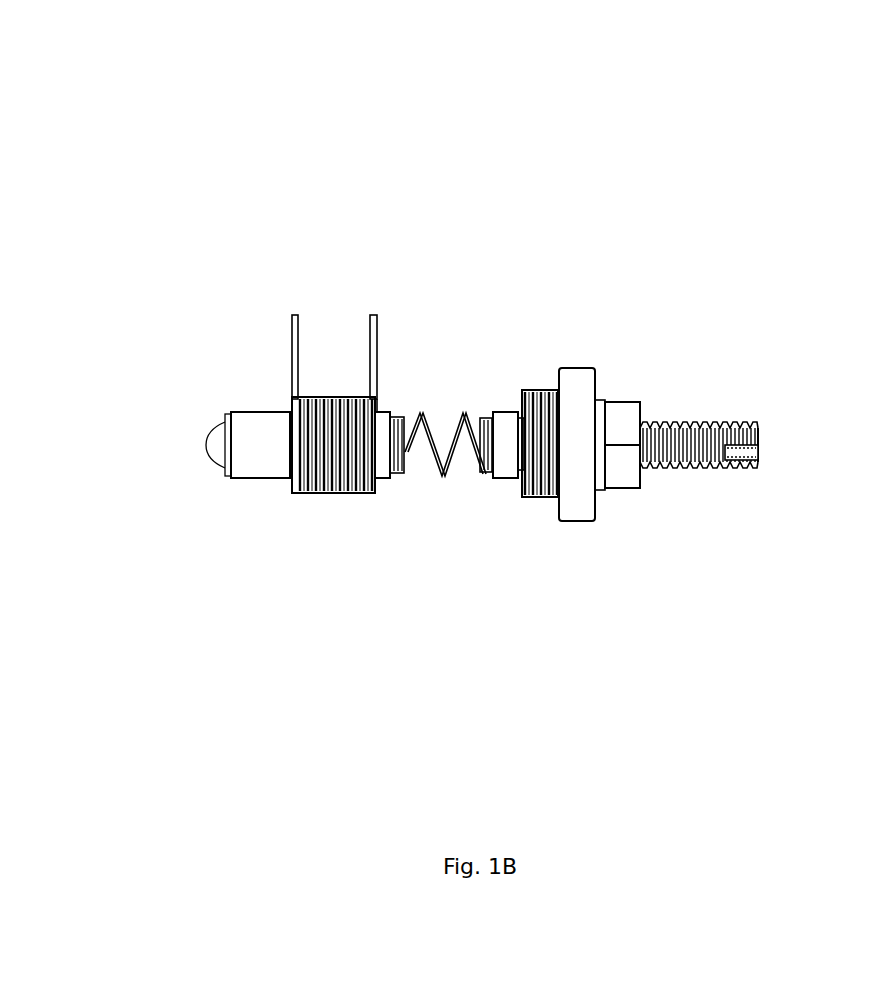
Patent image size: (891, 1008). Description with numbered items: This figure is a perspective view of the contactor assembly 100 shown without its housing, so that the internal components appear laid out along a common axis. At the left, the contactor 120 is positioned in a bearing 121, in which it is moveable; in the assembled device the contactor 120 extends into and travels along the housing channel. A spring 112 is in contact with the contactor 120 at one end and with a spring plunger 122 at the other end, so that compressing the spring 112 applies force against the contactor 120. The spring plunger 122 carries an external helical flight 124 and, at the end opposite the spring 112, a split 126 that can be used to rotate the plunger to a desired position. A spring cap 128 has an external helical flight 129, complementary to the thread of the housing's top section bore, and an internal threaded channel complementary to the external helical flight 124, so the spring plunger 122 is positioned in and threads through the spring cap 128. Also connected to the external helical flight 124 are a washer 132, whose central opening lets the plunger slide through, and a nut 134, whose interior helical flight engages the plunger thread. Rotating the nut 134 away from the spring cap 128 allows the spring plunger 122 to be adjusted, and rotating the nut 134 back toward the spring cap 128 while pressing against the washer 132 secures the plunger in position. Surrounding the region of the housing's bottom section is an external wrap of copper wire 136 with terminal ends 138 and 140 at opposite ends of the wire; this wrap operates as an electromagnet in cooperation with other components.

The contactor assembly 100 is at (379, 175).
The spring 112 is at (420, 412).
The contactor 120 is at (217, 448).
The bearing 121 is at (247, 408).
The spring plunger 122 is at (760, 416).
The external helical flight 124 is at (722, 476).
The split 126 is at (758, 452).
The spring cap 128 is at (575, 503).
The external helical flight 129 is at (536, 511).
The washer 132 is at (603, 397).
The nut 134 is at (625, 492).
The external wrap of copper wire 136 is at (330, 480).
The terminal end 138 is at (298, 312).
The terminal end 140 is at (377, 315).